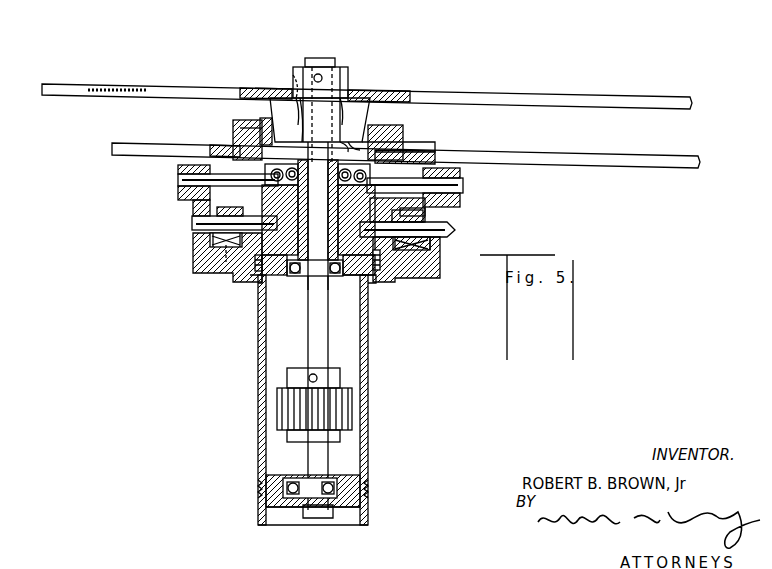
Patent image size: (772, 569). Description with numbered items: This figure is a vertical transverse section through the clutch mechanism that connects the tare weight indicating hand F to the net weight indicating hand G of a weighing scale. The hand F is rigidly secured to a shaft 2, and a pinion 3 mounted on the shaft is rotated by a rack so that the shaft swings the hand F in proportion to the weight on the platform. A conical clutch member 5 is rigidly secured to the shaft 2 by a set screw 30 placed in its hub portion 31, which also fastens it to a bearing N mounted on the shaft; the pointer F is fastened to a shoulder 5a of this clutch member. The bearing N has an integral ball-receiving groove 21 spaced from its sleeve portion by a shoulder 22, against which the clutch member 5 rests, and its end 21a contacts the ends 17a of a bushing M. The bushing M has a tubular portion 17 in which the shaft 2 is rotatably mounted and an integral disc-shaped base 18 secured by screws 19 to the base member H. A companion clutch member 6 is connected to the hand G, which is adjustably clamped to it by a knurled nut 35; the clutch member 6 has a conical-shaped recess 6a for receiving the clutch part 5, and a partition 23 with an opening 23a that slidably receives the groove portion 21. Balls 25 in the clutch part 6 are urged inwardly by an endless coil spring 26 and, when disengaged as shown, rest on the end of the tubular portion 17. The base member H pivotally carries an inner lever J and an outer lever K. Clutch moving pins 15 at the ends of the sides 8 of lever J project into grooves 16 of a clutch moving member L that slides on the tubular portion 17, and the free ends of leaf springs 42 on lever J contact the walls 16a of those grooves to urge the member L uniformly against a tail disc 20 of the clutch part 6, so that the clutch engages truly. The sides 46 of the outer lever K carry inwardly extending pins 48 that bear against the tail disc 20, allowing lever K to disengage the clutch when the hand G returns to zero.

The shaft 2 is at (318, 58).
The pinion 3 is at (338, 408).
The clutch member 5 is at (355, 110).
The shoulder 5a is at (302, 70).
The clutch member 6 is at (378, 118).
The conical-shaped recess 6a is at (368, 147).
The sides 8 is at (212, 239).
The clutch moving pins 15 is at (192, 223).
The grooves 16 is at (286, 277).
The walls 16a is at (348, 277).
The tubular portion 17 is at (318, 277).
The ends 17a is at (297, 100).
The disc-shaped base 18 is at (227, 250).
The screws 19 is at (254, 275).
The tail disc 20 is at (245, 192).
The ball-receiving groove 21 is at (340, 143).
The end 21a is at (326, 98).
The shoulder 22 is at (297, 137).
The partition 23 is at (240, 138).
The opening 23a is at (240, 127).
The ball 25 is at (265, 168).
The endless coil spring 26 is at (370, 172).
The set screw 30 is at (322, 80).
The hub portion 31 is at (298, 88).
The knurled nut 35 is at (245, 125).
The leaf springs 42 is at (205, 245).
The sides 46 is at (440, 203).
The pins 48 is at (178, 180).
The tare weight indicating hand F is at (688, 98).
The net weight indicating hand G is at (688, 156).
The base member H is at (188, 268).
The inner actuating lever J is at (222, 247).
The outer actuating lever K is at (176, 192).
The clutch moving member L is at (444, 207).
The bushing M is at (390, 255).
The bearing N is at (340, 58).